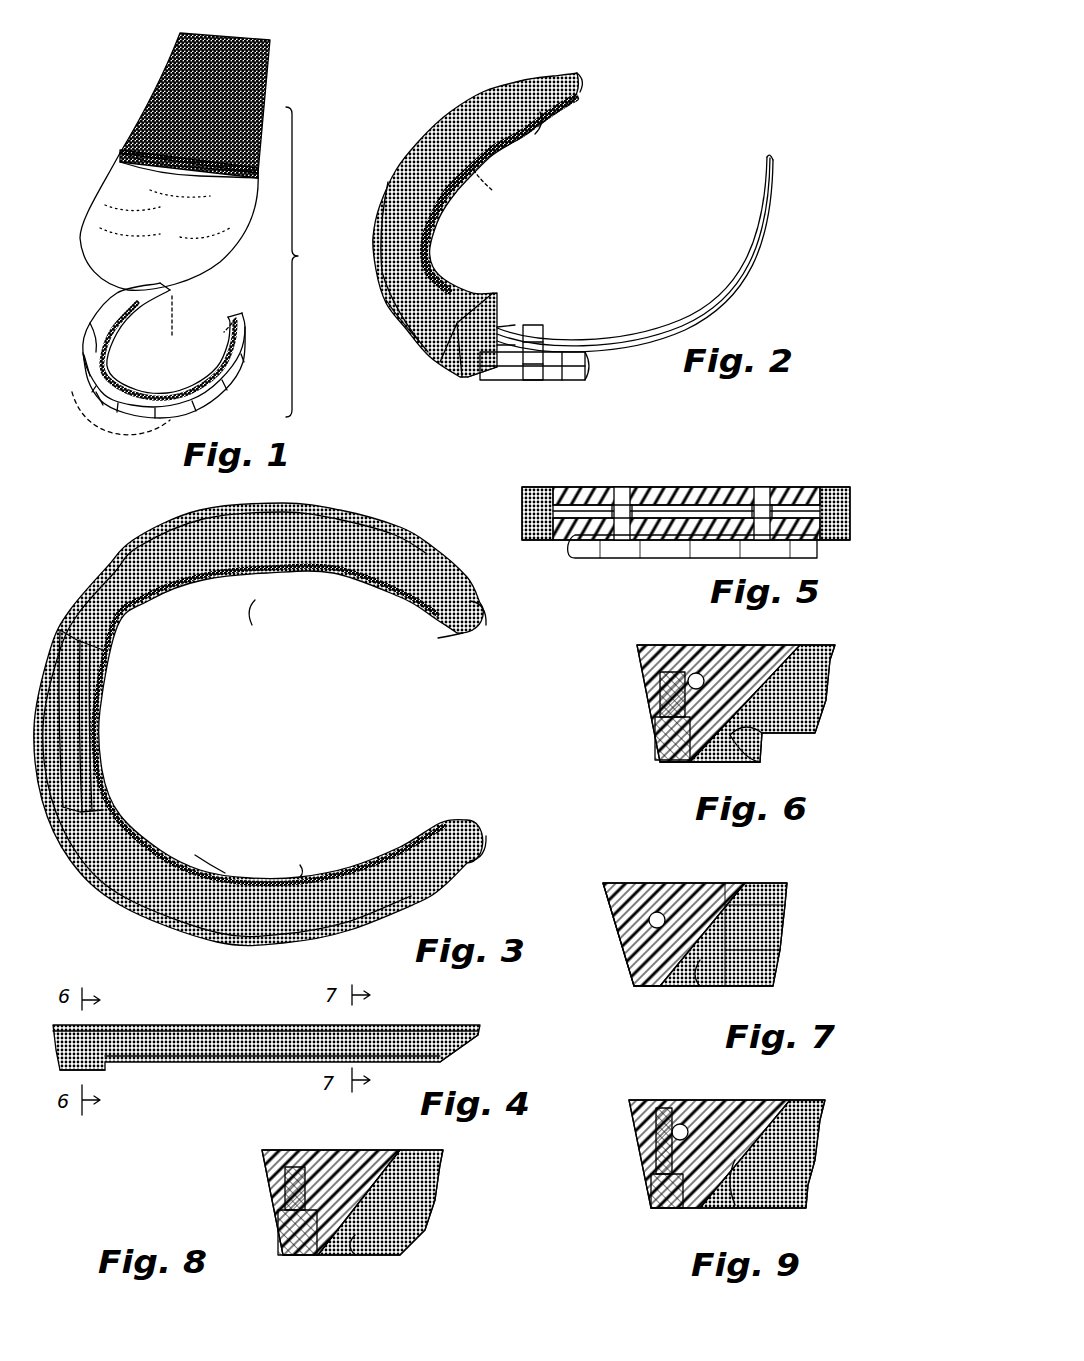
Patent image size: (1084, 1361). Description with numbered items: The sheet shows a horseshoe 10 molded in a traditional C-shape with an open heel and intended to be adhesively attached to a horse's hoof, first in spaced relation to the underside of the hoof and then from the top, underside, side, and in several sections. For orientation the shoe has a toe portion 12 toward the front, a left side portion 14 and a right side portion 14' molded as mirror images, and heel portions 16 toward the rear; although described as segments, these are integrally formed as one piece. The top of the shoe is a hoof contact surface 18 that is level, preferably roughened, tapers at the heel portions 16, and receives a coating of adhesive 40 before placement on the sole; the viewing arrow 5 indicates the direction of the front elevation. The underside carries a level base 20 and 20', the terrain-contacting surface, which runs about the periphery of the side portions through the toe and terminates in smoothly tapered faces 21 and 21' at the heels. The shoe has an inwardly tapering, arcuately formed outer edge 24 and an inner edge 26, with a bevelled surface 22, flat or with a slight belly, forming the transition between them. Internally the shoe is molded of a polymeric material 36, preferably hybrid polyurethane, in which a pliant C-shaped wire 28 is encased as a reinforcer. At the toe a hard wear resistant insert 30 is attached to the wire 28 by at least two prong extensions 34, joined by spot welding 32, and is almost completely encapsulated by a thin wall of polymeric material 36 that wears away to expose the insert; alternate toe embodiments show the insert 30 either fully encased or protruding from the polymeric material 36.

In FIG. 1, the arrow 5 is at (112, 440).
In FIG. 1, the horseshoe 10 is at (74, 318).
In FIG. 2, the horseshoe 10 is at (396, 130).
In FIG. 3, the horseshoe 10 is at (95, 553).
In FIG. 4, the horseshoe 10 is at (114, 1000).
In FIG. 1, the toe portion 12 is at (90, 398).
In FIG. 2, the toe portion 12 is at (430, 372).
In FIG. 3, the toe portion 12 is at (56, 818).
In FIG. 5, the toe portion 12 is at (655, 565).
In FIG. 6, the toe portion 12 is at (625, 700).
In FIG. 8, the toe portion 12 is at (245, 1170).
In FIG. 9, the toe portion 12 is at (628, 1175).
In FIG. 1, the left side portion 14 is at (175, 372).
In FIG. 3, the left side portion 14 is at (261, 621).
In FIG. 1, the right side portion 14' is at (157, 340).
In FIG. 2, the right side portion 14' is at (477, 211).
In FIG. 3, the right side portion 14' is at (288, 849).
In FIG. 1, the heel portions 16 is at (236, 300).
In FIG. 2, the heel portions 16 is at (600, 100).
In FIG. 3, the heel portions 16 is at (448, 660).
In FIG. 1, the hoof contact surface 18 is at (90, 345).
In FIG. 2, the hoof contact surface 18 is at (392, 212).
In FIG. 4, the hoof contact surface 18 is at (162, 1025).
In FIG. 7, the hoof contact surface 18 is at (735, 883).
In FIG. 3, the base 20 is at (125, 726).
In FIG. 4, the base 20 is at (118, 1079).
In FIG. 6, the base 20 is at (702, 789).
In FIG. 7, the base 20 is at (686, 986).
In FIG. 2, the base 20' is at (550, 136).
In FIG. 3, the base 20' is at (217, 841).
In FIG. 3, the tapered face 21 is at (444, 639).
In FIG. 4, the tapered face 21 is at (473, 1048).
In FIG. 3, the tapered face 21' is at (466, 813).
In FIG. 3, the bevelled surface 22 is at (125, 605).
In FIG. 6, the bevelled surface 22 is at (762, 740).
In FIG. 7, the bevelled surface 22 is at (700, 982).
In FIG. 8, the bevelled surface 22 is at (358, 1248).
In FIG. 9, the bevelled surface 22 is at (732, 1190).
In FIG. 2, the outer edge 24 is at (376, 238).
In FIG. 3, the outer edge 24 is at (358, 508).
In FIG. 4, the outer edge 24 is at (222, 1045).
In FIG. 7, the outer edge 24 is at (615, 940).
In FIG. 2, the inner edge 26 is at (483, 160).
In FIG. 3, the inner edge 26 is at (317, 580).
In FIG. 6, the inner edge 26 is at (780, 660).
In FIG. 7, the inner edge 26 is at (770, 883).
In FIG. 2, the wire 28 is at (700, 300).
In FIG. 5, the wire 28 is at (805, 487).
In FIG. 6, the wire 28 is at (700, 665).
In FIG. 7, the wire 28 is at (645, 905).
In FIG. 8, the wire 28 is at (318, 1158).
In FIG. 9, the wire 28 is at (680, 1118).
In FIG. 2, the hard wear resistant insert 30 is at (568, 368).
In FIG. 5, the hard wear resistant insert 30 is at (600, 558).
In FIG. 6, the hard wear resistant insert 30 is at (658, 740).
In FIG. 8, the hard wear resistant insert 30 is at (276, 1236).
In FIG. 9, the hard wear resistant insert 30 is at (660, 1210).
In FIG. 2, the spot weld 32 is at (515, 368).
In FIG. 2, the prong extensions 34 is at (536, 330).
In FIG. 5, the prong extensions 34 is at (622, 487).
In FIG. 6, the prong extensions 34 is at (660, 698).
In FIG. 8, the prong extensions 34 is at (275, 1197).
In FIG. 9, the prong extensions 34 is at (655, 1150).
In FIG. 2, the polymeric material 36 is at (498, 325).
In FIG. 5, the polymeric material 36 is at (690, 503).
In FIG. 1, the adhesive 40 is at (182, 318).